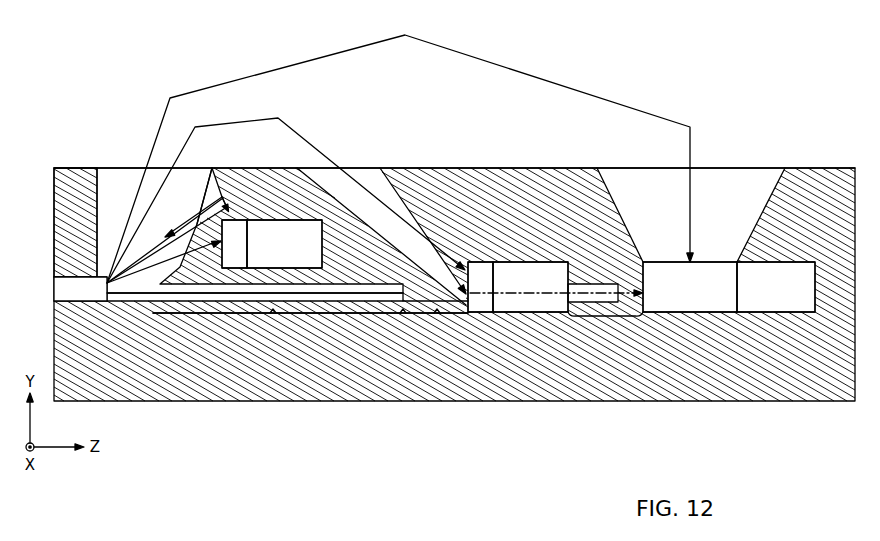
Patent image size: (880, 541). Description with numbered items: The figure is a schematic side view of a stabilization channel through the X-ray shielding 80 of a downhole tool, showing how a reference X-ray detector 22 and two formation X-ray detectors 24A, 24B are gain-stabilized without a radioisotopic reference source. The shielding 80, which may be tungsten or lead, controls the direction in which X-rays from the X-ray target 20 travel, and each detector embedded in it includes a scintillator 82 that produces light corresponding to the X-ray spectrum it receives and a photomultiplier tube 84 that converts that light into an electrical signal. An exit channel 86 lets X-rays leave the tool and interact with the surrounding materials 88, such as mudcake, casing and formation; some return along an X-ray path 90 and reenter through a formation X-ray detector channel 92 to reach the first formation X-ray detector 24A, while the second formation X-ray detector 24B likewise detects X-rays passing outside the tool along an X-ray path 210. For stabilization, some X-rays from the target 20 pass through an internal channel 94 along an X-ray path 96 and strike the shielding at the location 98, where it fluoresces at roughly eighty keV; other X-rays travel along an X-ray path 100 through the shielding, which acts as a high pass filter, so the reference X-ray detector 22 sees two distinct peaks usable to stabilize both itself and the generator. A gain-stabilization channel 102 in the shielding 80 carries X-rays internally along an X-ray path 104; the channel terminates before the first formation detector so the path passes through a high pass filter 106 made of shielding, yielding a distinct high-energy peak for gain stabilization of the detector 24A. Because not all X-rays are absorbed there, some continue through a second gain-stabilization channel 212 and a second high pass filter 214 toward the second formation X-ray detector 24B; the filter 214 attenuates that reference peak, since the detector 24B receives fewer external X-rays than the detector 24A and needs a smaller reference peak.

The X-ray target 20 is at (53, 287).
The reference X-ray detector 22 is at (297, 220).
The first formation X-ray detector 24A is at (533, 313).
The second formation X-ray detector 24B is at (718, 314).
The X-ray shielding 80 is at (454, 284).
The scintillator 82 is at (479, 266).
The photomultiplier tube 84 is at (531, 266).
The exit channel 86 is at (105, 172).
The surrounding materials 88 is at (454, 129).
The X-ray path 90 is at (314, 151).
The formation X-ray detector channel 92 is at (390, 187).
The internal channel 94 is at (215, 173).
The X-ray path 96 is at (161, 237).
The fluorescence location 98 is at (229, 205).
The X-ray path 100 is at (140, 260).
The gain-stabilization channel 102 is at (275, 316).
The X-ray path 104 is at (123, 301).
The high pass filter 106 is at (435, 316).
The X-ray path 210 is at (540, 78).
The second gain-stabilization channel 212 is at (595, 318).
The second high pass filter 214 is at (633, 316).